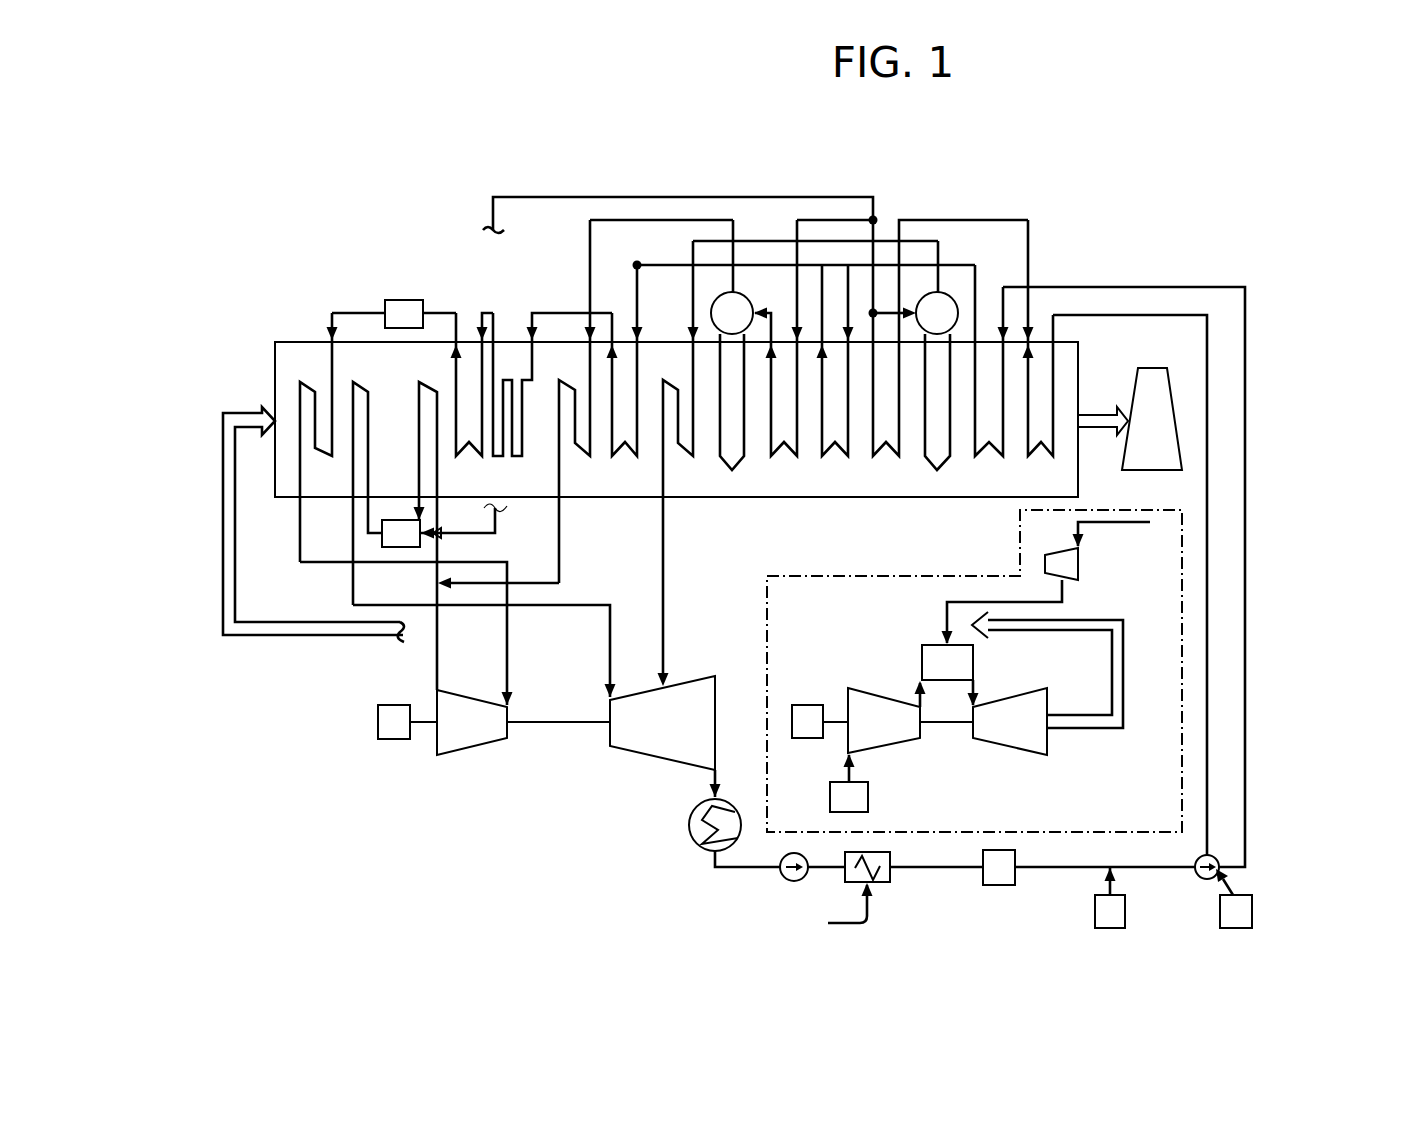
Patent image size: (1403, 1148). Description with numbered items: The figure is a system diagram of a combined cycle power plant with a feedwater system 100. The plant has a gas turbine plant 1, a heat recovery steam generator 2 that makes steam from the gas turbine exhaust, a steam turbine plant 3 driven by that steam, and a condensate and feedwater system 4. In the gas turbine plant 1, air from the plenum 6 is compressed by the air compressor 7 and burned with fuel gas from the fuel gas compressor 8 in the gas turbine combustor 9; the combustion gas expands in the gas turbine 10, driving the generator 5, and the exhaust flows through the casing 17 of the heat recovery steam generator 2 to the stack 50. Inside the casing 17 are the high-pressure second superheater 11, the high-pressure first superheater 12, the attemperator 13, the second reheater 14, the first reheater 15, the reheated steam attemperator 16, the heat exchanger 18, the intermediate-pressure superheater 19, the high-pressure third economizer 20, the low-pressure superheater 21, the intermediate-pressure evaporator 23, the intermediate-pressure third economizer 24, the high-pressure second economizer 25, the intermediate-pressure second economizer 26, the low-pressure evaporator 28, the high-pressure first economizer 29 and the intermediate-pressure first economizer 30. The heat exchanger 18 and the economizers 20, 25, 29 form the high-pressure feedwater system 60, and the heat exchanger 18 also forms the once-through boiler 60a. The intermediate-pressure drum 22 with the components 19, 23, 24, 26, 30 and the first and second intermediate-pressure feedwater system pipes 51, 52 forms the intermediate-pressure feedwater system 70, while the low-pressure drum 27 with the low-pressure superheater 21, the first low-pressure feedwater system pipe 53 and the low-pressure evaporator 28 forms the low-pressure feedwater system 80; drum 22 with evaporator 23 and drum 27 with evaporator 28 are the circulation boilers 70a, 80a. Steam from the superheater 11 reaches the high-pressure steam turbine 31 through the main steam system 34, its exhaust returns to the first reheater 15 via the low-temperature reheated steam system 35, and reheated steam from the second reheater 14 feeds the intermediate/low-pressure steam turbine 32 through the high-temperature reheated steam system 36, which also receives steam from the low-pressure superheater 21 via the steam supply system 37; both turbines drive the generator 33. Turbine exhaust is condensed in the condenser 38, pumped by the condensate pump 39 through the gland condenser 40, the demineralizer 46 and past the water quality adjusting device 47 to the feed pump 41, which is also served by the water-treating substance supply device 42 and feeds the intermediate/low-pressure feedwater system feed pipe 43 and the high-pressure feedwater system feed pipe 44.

The gas turbine plant 1 is at (893, 576).
The heat recovery steam generator 2 is at (776, 172).
The steam turbine plant 3 is at (472, 763).
The condensate and feedwater system 4 is at (718, 875).
The generator 5 is at (806, 704).
The plenum 6 is at (830, 798).
The air compressor 7 is at (885, 747).
The fuel gas compressor 8 is at (1082, 565).
The gas turbine combustor 9 is at (922, 662).
The gas turbine 10 is at (1010, 755).
The high-pressure second superheater 11 is at (312, 384).
The high-pressure first superheater 12 is at (474, 455).
The attemperator 13 is at (392, 299).
The second reheater 14 is at (365, 385).
The first reheater 15 is at (431, 385).
The reheated steam attemperator 16 is at (400, 519).
The casing 17 is at (275, 352).
The heat exchanger 18 is at (512, 457).
The intermediate-pressure superheater 19 is at (585, 456).
The high-pressure third economizer 20 is at (622, 456).
The low-pressure superheater 21 is at (689, 456).
The intermediate-pressure drum 22 is at (749, 299).
The intermediate-pressure evaporator 23 is at (740, 462).
The intermediate-pressure third economizer 24 is at (780, 456).
The high-pressure second economizer 25 is at (832, 456).
The intermediate-pressure second economizer 26 is at (882, 456).
The low-pressure drum 27 is at (949, 295).
The low-pressure evaporator 28 is at (944, 462).
The high-pressure first economizer 29 is at (985, 456).
The intermediate-pressure first economizer 30 is at (1035, 456).
The high-pressure steam turbine 31 is at (471, 699).
The intermediate/low-pressure steam turbine 32 is at (717, 723).
The generator 33 is at (392, 703).
The main steam system 34 is at (509, 628).
The low-temperature reheated steam system 35 is at (439, 628).
The high-temperature reheated steam system 36 is at (592, 605).
The steam supply system 37 is at (666, 548).
The condenser 38 is at (701, 851).
The condensate pump 39 is at (794, 881).
The gland condenser 40 is at (878, 883).
The feed pump 41 is at (1213, 855).
The water-treating substance supply device 42 is at (1220, 910).
The intermediate/low-pressure feedwater system feed pipe 43 is at (1212, 725).
The high-pressure feedwater system feed pipe 44 is at (1250, 688).
The demineralizer 46 is at (1003, 886).
The water quality adjusting device 47 is at (1095, 910).
The stack 50 is at (1148, 368).
The first intermediate-pressure feedwater system pipe 51 is at (1029, 219).
The second intermediate-pressure feedwater system pipe 52 is at (878, 283).
The first low-pressure feedwater system pipe 53 is at (892, 302).
The high-pressure feedwater system 60 is at (524, 505).
The once-through boiler 60a is at (512, 362).
The intermediate-pressure feedwater system 70 is at (752, 505).
The circulation boiler 70a is at (710, 297).
The low-pressure feedwater system 80 is at (952, 505).
The circulation boiler 80a is at (962, 311).
The feedwater system 100 is at (1193, 842).